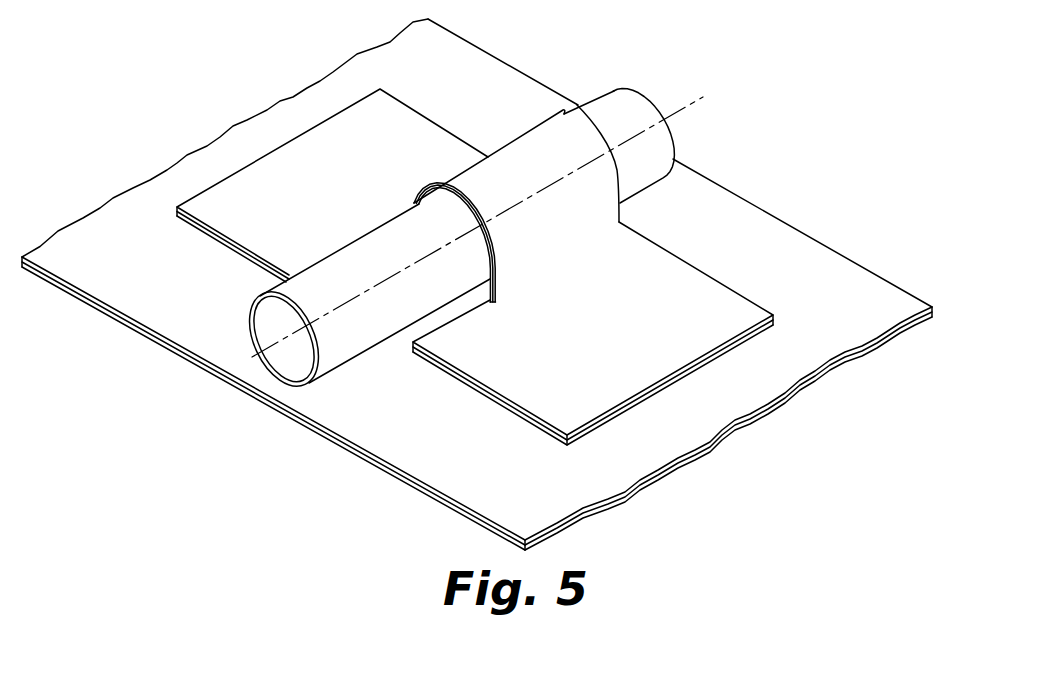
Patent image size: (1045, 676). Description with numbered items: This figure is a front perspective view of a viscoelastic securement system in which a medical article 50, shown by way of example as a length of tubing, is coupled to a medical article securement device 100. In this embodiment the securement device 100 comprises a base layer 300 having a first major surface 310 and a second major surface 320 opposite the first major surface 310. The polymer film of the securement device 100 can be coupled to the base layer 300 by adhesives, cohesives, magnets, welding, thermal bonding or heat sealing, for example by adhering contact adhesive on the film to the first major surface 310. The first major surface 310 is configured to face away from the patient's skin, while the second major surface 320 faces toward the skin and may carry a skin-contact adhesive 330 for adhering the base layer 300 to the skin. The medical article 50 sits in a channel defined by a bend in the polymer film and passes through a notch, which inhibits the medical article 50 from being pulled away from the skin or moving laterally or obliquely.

The medical article securement device 100 is at (327, 146).
The medical article 50 is at (630, 103).
The base layer 300 is at (477, 284).
The first major surface 310 is at (858, 287).
The second major surface 320 is at (698, 449).
The skin-contact adhesive 330 is at (597, 514).